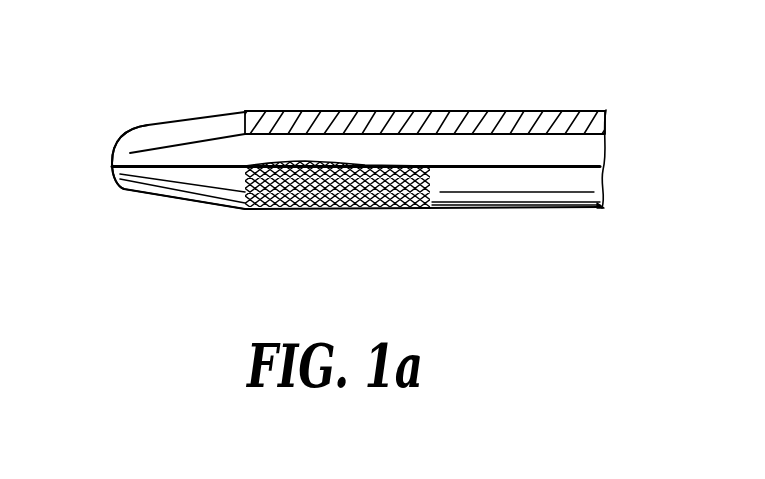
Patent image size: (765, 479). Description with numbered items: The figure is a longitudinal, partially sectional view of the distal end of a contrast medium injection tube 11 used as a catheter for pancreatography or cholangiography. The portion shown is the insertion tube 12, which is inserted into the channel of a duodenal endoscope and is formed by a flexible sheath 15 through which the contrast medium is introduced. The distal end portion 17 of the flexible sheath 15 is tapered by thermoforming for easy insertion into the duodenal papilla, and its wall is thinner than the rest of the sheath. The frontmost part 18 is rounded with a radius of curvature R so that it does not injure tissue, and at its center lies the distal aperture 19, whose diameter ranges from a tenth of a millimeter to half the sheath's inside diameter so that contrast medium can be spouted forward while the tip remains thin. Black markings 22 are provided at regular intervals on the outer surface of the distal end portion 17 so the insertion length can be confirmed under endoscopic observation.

The contrast medium injection tube 11 is at (357, 57).
The insertion tube 12 is at (512, 107).
The flexible sheath 15 is at (410, 113).
The distal end portion 17 is at (155, 194).
The frontmost part 18 is at (144, 127).
The distal aperture 19 is at (111, 166).
The radius of curvature R is at (122, 185).
The black markings 22 is at (590, 213).